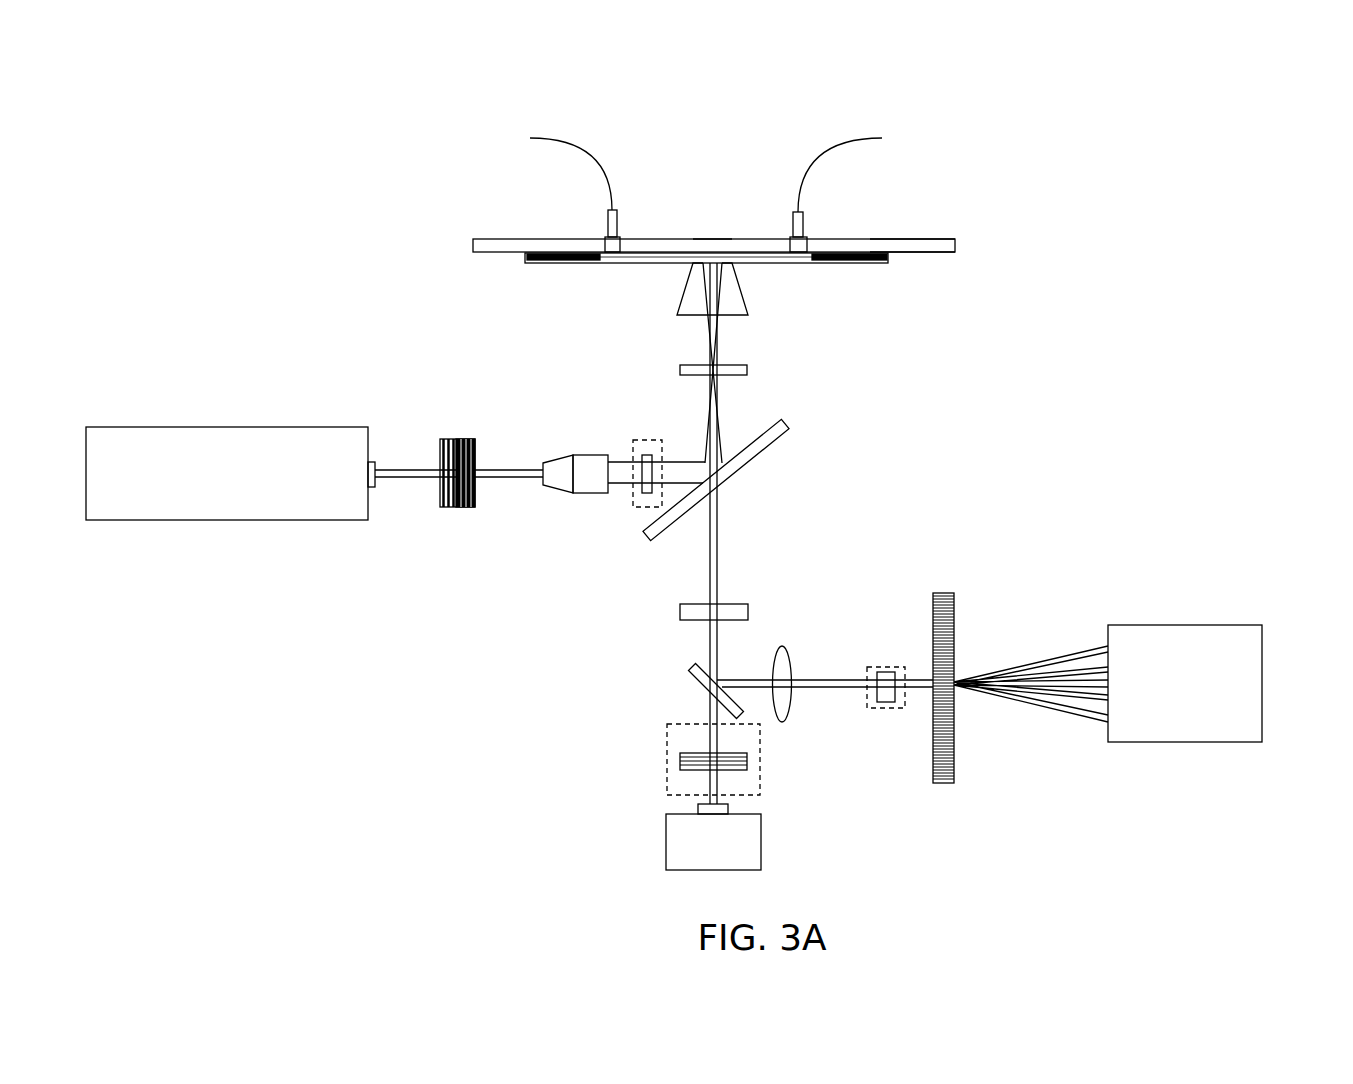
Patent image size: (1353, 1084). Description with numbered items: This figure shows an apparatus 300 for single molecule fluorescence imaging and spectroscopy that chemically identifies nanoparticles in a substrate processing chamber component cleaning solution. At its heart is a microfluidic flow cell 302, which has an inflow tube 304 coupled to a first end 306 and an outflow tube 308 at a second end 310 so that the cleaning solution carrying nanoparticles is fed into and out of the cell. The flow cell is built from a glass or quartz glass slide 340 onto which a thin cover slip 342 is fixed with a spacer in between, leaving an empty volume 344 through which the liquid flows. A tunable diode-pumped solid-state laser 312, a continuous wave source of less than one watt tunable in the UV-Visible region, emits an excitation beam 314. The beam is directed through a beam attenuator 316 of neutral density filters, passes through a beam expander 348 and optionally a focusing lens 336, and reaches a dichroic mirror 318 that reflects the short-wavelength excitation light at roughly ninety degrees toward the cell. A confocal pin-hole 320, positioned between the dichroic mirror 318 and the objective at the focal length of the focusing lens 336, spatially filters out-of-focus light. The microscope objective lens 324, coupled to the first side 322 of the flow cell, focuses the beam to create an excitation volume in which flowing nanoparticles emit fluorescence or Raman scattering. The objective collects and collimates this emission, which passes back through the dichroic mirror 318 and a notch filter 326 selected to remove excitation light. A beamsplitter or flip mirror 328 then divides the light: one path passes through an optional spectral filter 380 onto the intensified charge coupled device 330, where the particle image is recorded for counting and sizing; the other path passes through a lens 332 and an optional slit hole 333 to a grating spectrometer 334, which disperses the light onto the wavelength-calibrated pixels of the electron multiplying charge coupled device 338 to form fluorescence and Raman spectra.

The apparatus 300 is at (1203, 100).
The microfluidic flow cell 302 is at (962, 212).
The inflow tube 304 is at (593, 163).
The first end 306 is at (528, 237).
The outflow tube 308 is at (818, 165).
The second end 310 is at (895, 237).
The tunable diode-pumped solid-state laser 312 is at (226, 425).
The excitation beam 314 is at (510, 462).
The beam attenuator 316 is at (452, 425).
The dichroic mirror 318 is at (753, 462).
The confocal pin-hole 320 is at (748, 369).
The first side 322 is at (558, 267).
The microscope objective lens 324 is at (742, 290).
The notch filter 326 is at (680, 610).
The beamsplitter (or flip mirror) 328 is at (690, 687).
The intensified charge coupled device 330 is at (667, 843).
The lens 332 is at (790, 658).
The slit hole 333 is at (882, 667).
The grating spectrometer 334 is at (943, 592).
The focusing lens 336 is at (647, 453).
The electron multiplying charge coupled device 338 is at (1185, 624).
The glass slide 340 is at (707, 237).
The cover slip 342 is at (598, 265).
The empty volume 344 is at (665, 255).
The beam expander 348 is at (592, 455).
The spectral filter 380 is at (667, 758).